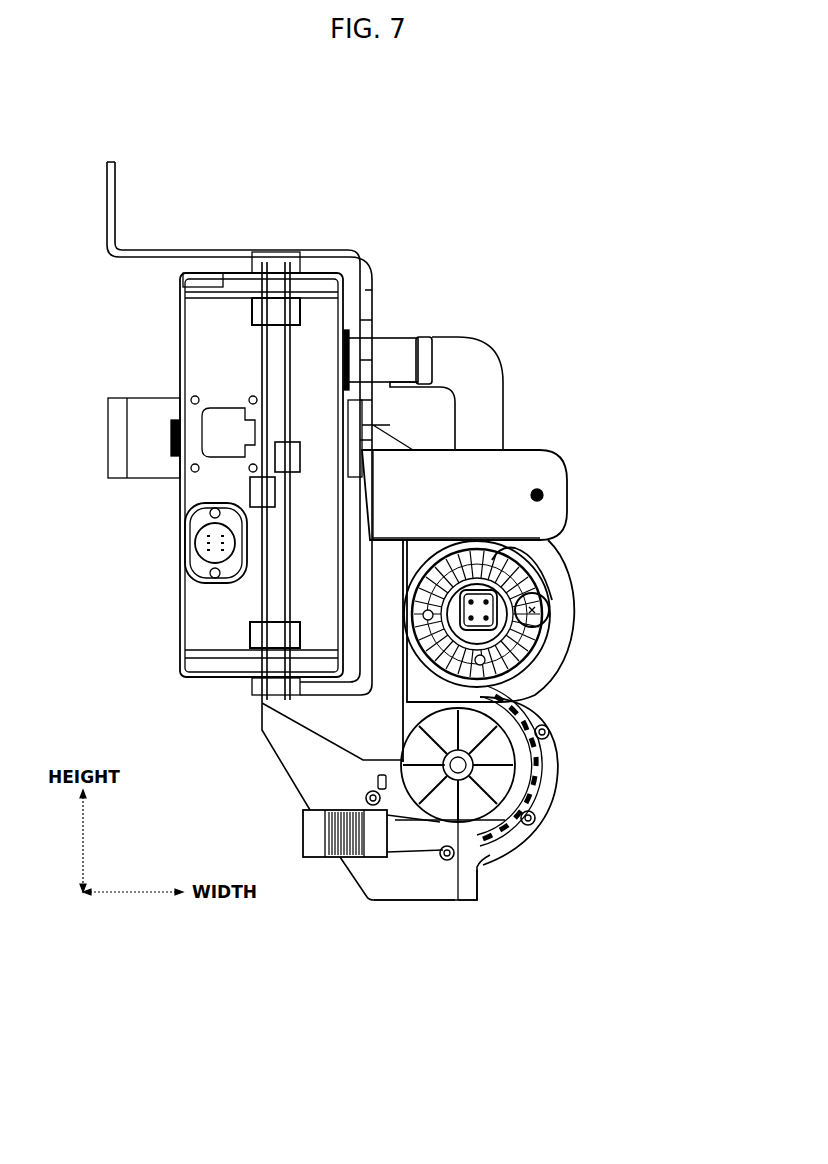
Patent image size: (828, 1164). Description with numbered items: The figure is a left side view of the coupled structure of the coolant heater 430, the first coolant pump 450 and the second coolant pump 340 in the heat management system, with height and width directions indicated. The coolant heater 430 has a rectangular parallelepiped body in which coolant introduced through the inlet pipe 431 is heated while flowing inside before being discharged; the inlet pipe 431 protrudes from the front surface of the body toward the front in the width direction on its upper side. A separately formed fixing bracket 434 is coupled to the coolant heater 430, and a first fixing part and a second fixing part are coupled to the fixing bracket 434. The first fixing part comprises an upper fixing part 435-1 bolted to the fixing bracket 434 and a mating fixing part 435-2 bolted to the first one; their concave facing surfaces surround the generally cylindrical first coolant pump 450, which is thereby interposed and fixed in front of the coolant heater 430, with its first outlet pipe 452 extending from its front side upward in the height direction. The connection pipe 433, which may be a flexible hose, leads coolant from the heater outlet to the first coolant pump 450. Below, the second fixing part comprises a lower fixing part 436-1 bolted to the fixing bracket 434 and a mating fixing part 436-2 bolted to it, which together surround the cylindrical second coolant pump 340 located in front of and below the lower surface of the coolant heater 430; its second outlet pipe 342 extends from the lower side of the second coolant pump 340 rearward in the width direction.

The coolant heater 430 is at (215, 333).
The inlet pipe 431 is at (385, 350).
The connection pipe 433 is at (455, 340).
The fixing bracket 434 is at (203, 250).
The 1-1-th fixing part 435-1 is at (347, 723).
The 1-2-th fixing part 435-2 is at (553, 650).
The 2-1-th fixing part 436-1 is at (418, 880).
The 2-2-th fixing part 436-2 is at (468, 883).
The second coolant pump 340 is at (553, 750).
The second outlet pipe 342 is at (303, 830).
The first coolant pump 450 is at (565, 617).
The first outlet pipe 452 is at (570, 458).